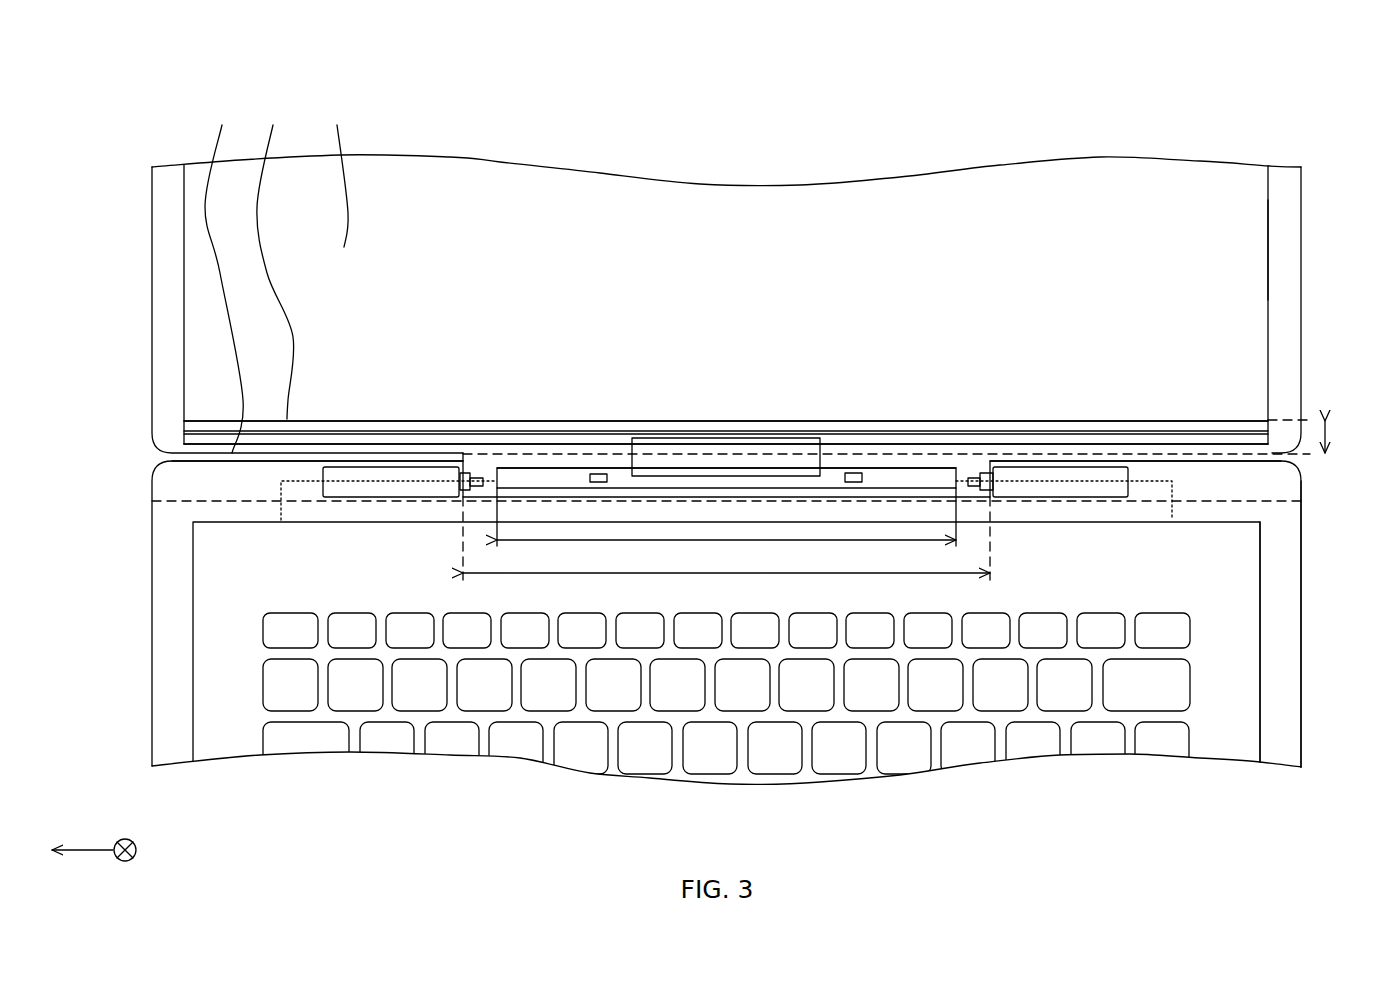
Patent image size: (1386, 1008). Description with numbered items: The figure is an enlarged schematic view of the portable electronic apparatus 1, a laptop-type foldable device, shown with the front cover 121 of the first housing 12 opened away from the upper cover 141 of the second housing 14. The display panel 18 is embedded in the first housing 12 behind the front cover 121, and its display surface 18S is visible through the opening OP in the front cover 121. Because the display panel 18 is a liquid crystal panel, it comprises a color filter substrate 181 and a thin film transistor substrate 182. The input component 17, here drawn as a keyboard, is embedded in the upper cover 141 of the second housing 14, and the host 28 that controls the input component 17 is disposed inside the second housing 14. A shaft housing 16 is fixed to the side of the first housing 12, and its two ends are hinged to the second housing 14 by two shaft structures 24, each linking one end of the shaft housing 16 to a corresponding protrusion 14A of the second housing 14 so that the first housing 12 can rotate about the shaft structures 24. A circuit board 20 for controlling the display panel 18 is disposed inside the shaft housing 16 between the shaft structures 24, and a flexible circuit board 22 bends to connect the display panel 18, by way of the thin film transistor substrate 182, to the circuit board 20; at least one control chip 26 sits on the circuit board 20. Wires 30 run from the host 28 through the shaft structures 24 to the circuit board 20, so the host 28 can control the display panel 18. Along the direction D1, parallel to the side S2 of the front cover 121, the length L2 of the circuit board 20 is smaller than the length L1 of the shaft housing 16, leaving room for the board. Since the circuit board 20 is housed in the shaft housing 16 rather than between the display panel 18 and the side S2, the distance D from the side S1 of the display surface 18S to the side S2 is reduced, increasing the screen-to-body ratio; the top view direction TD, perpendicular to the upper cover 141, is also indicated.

The portable electronic apparatus 1 is at (1262, 100).
The first housing 12 is at (661, 304).
The front cover 121 is at (170, 287).
The second housing 14 is at (699, 618).
The upper cover 141 is at (170, 657).
The protrusion 14A is at (165, 489).
The shaft housing 16 is at (608, 462).
The input component 17 is at (644, 745).
The display panel 18 is at (533, 98).
The color filter substrate 181 is at (442, 426).
The thin film transistor substrate 182 is at (513, 440).
The display surface 18S is at (344, 172).
The circuit board 20 is at (900, 468).
The flexible circuit board 22 is at (713, 438).
The shaft structure 24 is at (323, 472).
The control chip 26 is at (855, 474).
The host 28 is at (1262, 652).
The wire 30 is at (280, 508).
The side of the display surface S1 is at (276, 258).
The side of the front cover S2 is at (224, 275).
The opening OP is at (1272, 247).
The distance D is at (1337, 437).
The length of the shaft housing L1 is at (726, 549).
The length of the circuit board L2 is at (726, 528).
The direction D1 is at (63, 850).
The top view direction TD is at (146, 850).